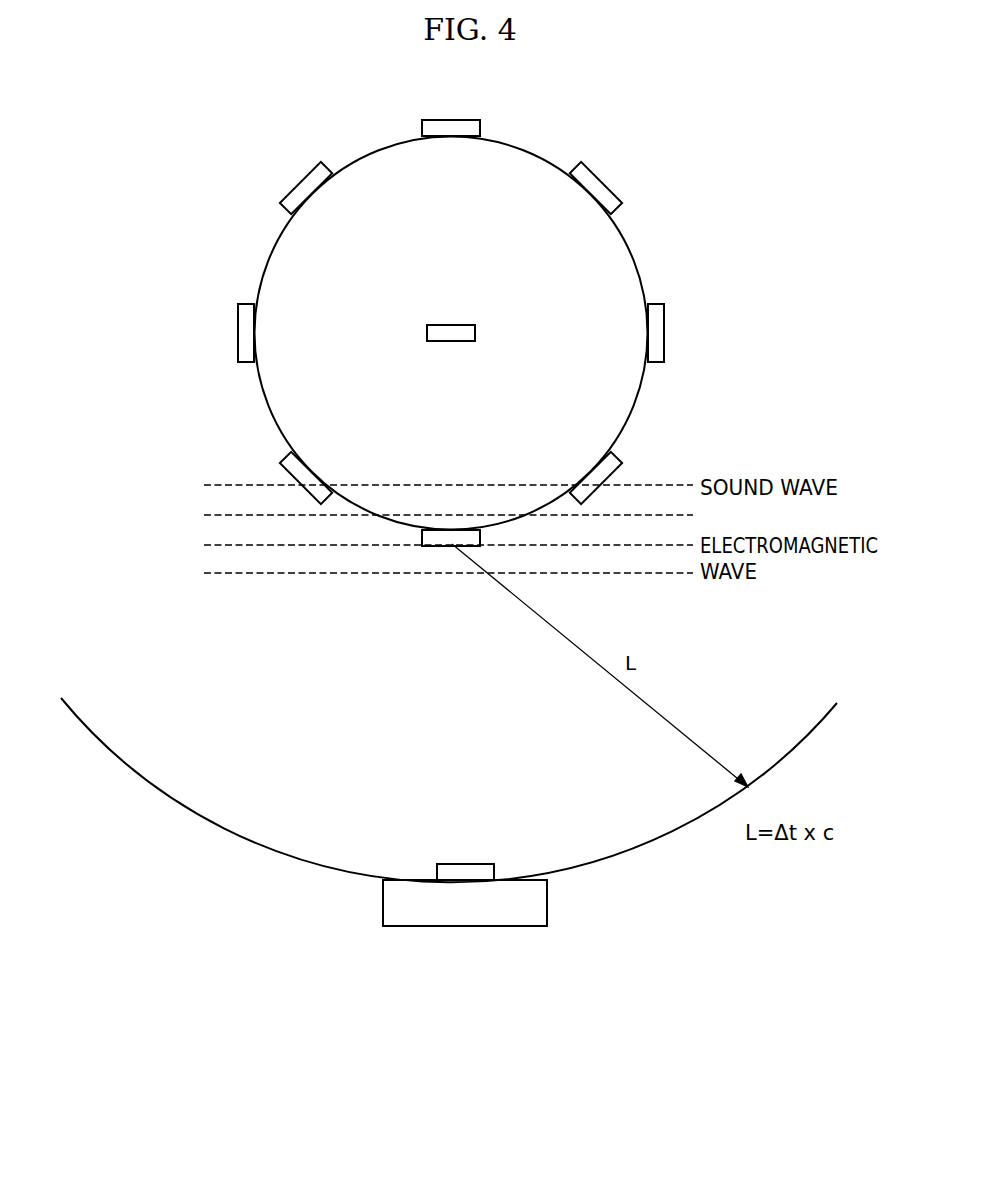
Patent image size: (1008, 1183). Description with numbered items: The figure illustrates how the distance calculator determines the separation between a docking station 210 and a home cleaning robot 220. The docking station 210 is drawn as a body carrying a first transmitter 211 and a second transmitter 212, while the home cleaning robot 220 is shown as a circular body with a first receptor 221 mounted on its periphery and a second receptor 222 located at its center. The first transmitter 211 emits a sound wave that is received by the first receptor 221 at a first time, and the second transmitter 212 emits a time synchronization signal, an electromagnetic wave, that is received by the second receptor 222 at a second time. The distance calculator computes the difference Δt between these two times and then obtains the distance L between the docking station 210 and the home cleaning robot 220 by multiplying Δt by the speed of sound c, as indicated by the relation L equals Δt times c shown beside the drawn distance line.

The docking station 210 is at (449, 864).
The first transmitter 211 is at (547, 903).
The second transmitter 212 is at (466, 862).
The home cleaning robot 220 is at (666, 233).
The first receptor 221 is at (301, 182).
The second receptor 222 is at (445, 341).